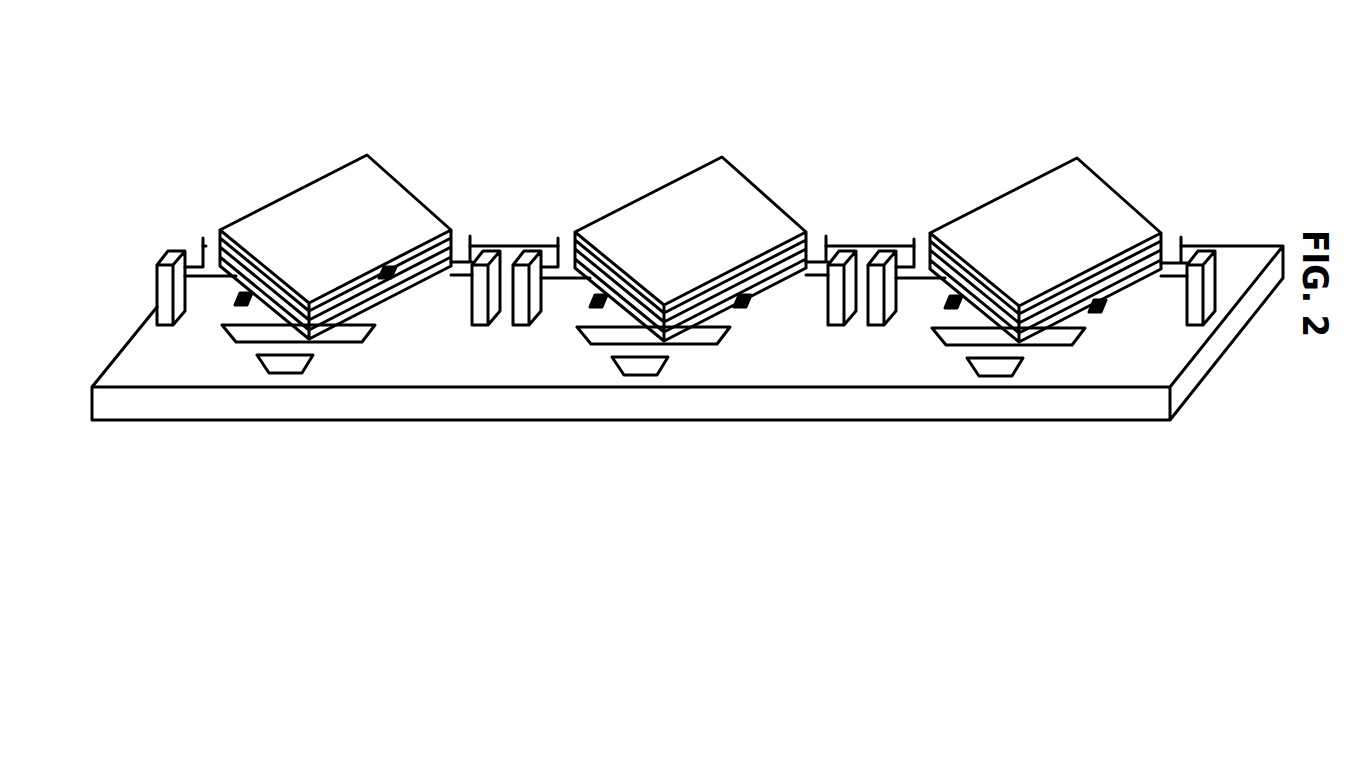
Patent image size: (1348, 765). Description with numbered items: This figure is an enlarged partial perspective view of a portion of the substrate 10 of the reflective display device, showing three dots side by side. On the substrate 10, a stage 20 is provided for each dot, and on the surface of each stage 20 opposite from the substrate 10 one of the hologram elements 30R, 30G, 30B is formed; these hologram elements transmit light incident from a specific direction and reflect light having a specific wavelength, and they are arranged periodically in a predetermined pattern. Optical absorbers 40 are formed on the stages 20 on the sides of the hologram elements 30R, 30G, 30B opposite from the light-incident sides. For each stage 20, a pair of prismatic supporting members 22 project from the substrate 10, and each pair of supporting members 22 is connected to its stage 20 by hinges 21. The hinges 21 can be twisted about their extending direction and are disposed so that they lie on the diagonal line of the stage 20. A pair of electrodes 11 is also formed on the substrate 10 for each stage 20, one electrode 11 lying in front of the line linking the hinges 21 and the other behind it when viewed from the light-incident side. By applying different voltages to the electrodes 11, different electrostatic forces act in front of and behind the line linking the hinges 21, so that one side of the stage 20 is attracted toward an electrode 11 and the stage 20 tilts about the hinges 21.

The substrate 10 is at (487, 400).
The electrodes 11 is at (588, 355).
The stage 20 is at (415, 288).
The hinges 21 is at (213, 243).
The supporting members 22 is at (163, 326).
The hologram element 30R is at (338, 183).
The hologram element 30G is at (737, 193).
The hologram element 30B is at (1090, 195).
The optical absorbers 40 is at (277, 318).